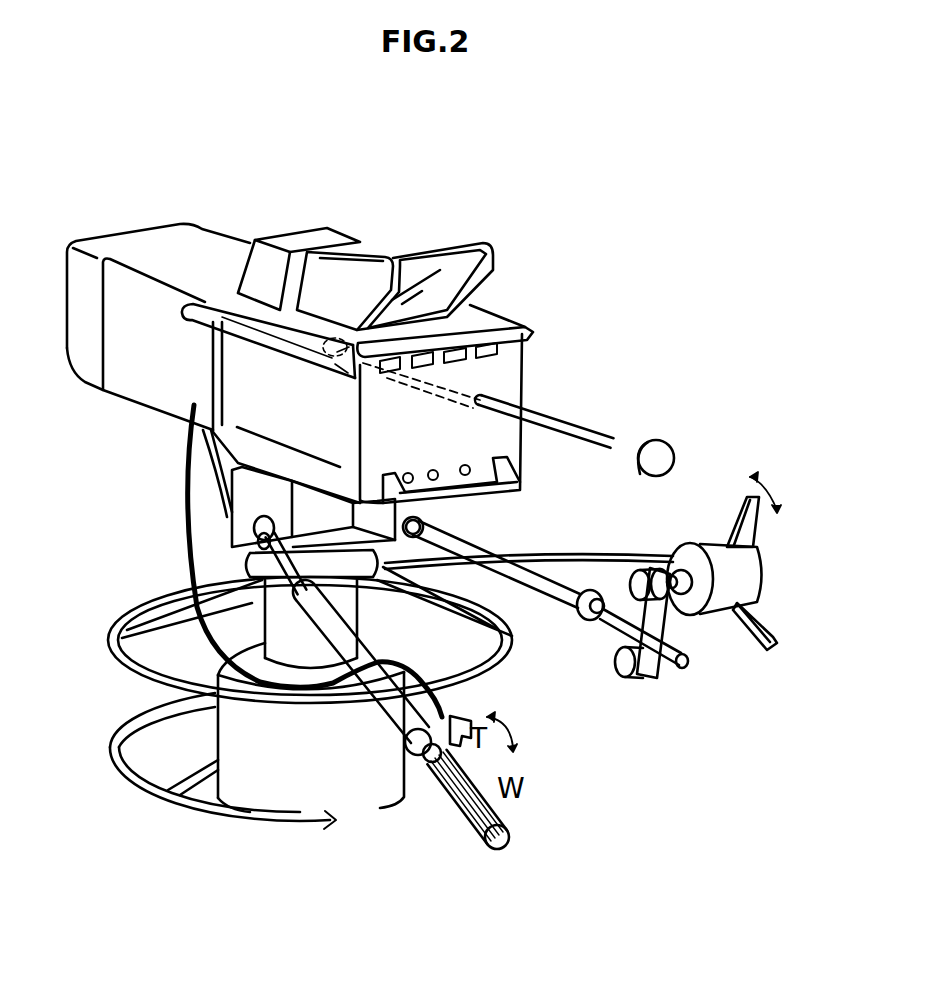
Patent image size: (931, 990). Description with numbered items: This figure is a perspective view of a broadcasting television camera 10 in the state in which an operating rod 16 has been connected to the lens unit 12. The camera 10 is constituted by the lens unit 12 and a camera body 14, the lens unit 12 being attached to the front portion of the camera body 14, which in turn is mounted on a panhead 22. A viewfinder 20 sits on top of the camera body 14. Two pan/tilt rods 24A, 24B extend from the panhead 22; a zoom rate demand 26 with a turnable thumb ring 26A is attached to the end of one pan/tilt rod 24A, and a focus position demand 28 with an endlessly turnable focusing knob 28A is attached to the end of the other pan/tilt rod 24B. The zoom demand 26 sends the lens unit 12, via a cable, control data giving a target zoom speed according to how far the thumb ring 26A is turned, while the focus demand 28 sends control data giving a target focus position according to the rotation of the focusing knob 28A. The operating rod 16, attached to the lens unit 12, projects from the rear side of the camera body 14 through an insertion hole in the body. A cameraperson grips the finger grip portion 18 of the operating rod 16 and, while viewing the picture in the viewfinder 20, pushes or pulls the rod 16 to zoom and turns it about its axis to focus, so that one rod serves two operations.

The television camera 10 is at (512, 306).
The lens unit 12 is at (230, 258).
The camera body 14 is at (512, 373).
The operating rod 16 is at (612, 442).
The finger grip portion 18 is at (668, 452).
The viewfinder 20 is at (410, 273).
The panhead 22 is at (247, 500).
The pan/tilt rod 24A is at (372, 683).
The pan/tilt rod 24B is at (466, 548).
The zoom rate demand 26 is at (420, 785).
The thumb ring 26A is at (457, 737).
The focus position demand 28 is at (698, 537).
The focusing knob 28A is at (752, 580).